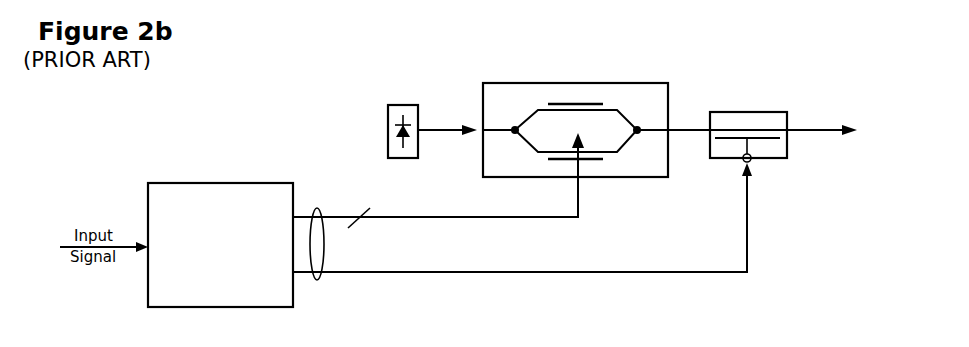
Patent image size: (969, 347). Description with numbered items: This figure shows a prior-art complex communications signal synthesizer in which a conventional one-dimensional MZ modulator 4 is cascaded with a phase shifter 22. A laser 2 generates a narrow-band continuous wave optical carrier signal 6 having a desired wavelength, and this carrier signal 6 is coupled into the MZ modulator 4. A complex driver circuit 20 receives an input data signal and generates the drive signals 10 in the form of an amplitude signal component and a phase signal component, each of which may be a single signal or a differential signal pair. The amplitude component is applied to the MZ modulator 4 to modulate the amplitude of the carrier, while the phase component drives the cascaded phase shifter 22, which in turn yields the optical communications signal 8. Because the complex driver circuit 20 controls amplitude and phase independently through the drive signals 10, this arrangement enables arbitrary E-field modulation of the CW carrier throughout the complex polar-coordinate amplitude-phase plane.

The laser 2 is at (400, 105).
The MZ modulator 4 is at (630, 83).
The carrier signal 6 is at (447, 128).
The optical communications signal 8 is at (810, 130).
The drive signals 10 is at (318, 280).
The complex driver circuit 20 is at (240, 183).
The phase shifter 22 is at (752, 112).